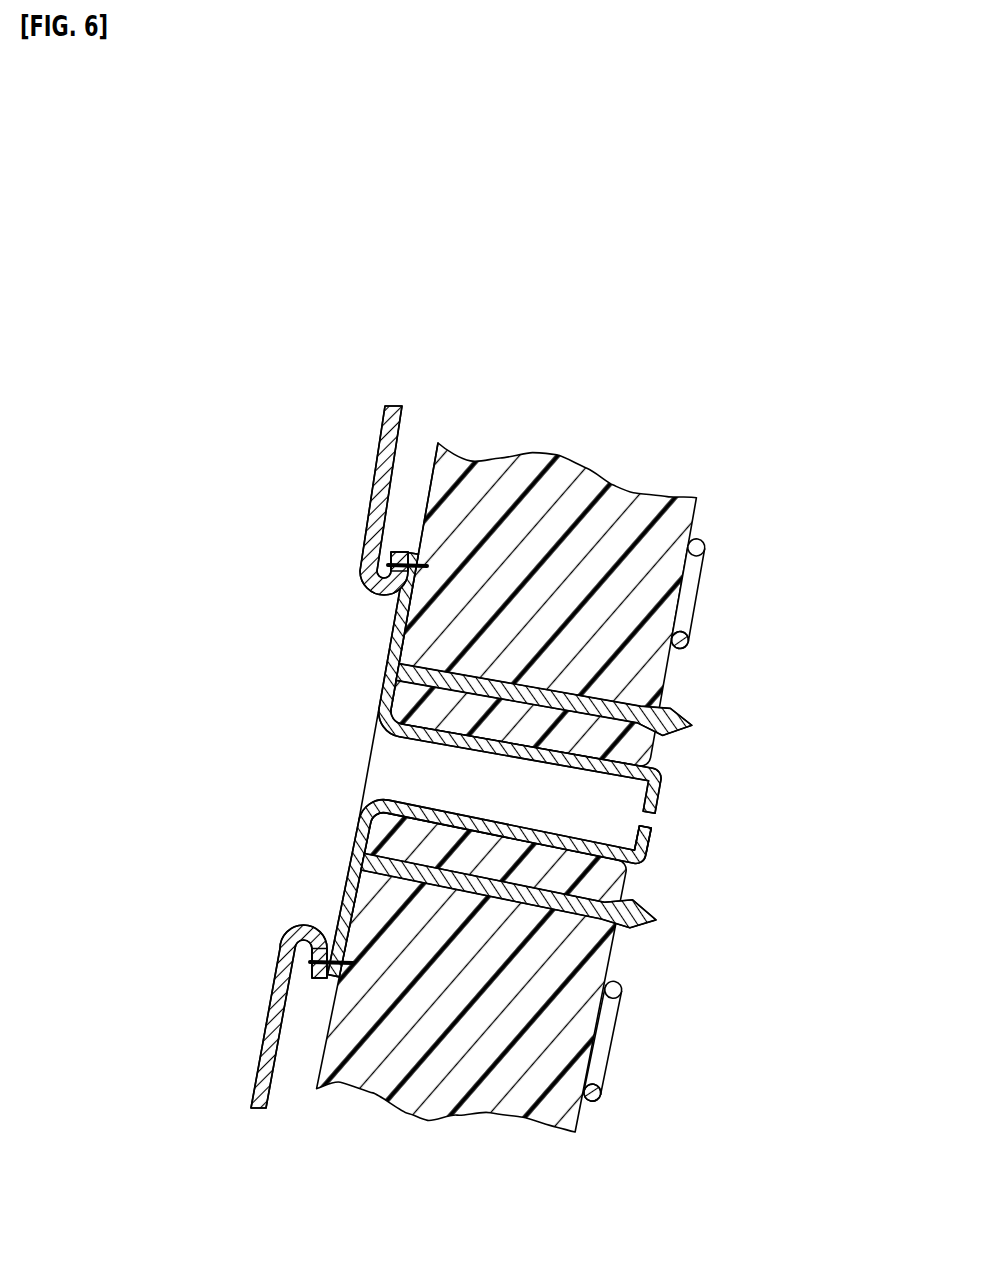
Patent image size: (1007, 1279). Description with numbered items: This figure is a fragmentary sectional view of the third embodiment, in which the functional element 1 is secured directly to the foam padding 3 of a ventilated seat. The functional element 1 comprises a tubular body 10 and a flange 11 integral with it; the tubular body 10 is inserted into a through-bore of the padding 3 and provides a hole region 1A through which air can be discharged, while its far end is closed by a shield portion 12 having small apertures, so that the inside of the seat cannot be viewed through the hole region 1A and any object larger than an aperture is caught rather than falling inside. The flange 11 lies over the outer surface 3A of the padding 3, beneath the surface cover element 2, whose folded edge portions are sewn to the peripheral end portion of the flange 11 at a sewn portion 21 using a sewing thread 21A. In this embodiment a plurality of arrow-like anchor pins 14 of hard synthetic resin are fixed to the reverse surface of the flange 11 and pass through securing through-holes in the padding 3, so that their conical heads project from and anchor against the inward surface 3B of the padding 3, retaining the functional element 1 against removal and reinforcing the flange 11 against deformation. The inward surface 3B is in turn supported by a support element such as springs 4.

The functional element 1 is at (500, 792).
The hole region 1A is at (363, 727).
The tubular body 10 is at (447, 773).
The flange 11 is at (343, 890).
The shield portion 12 is at (650, 847).
The anchor pins 14 is at (682, 704).
The surface cover element 2 is at (378, 453).
The hook portion 21 is at (395, 550).
The sewing thread 21A is at (307, 958).
The foam padding 3 is at (557, 473).
The outer surface of the padding 3A is at (437, 475).
The inward surface of the padding 3B is at (610, 958).
The springs 4 is at (697, 570).